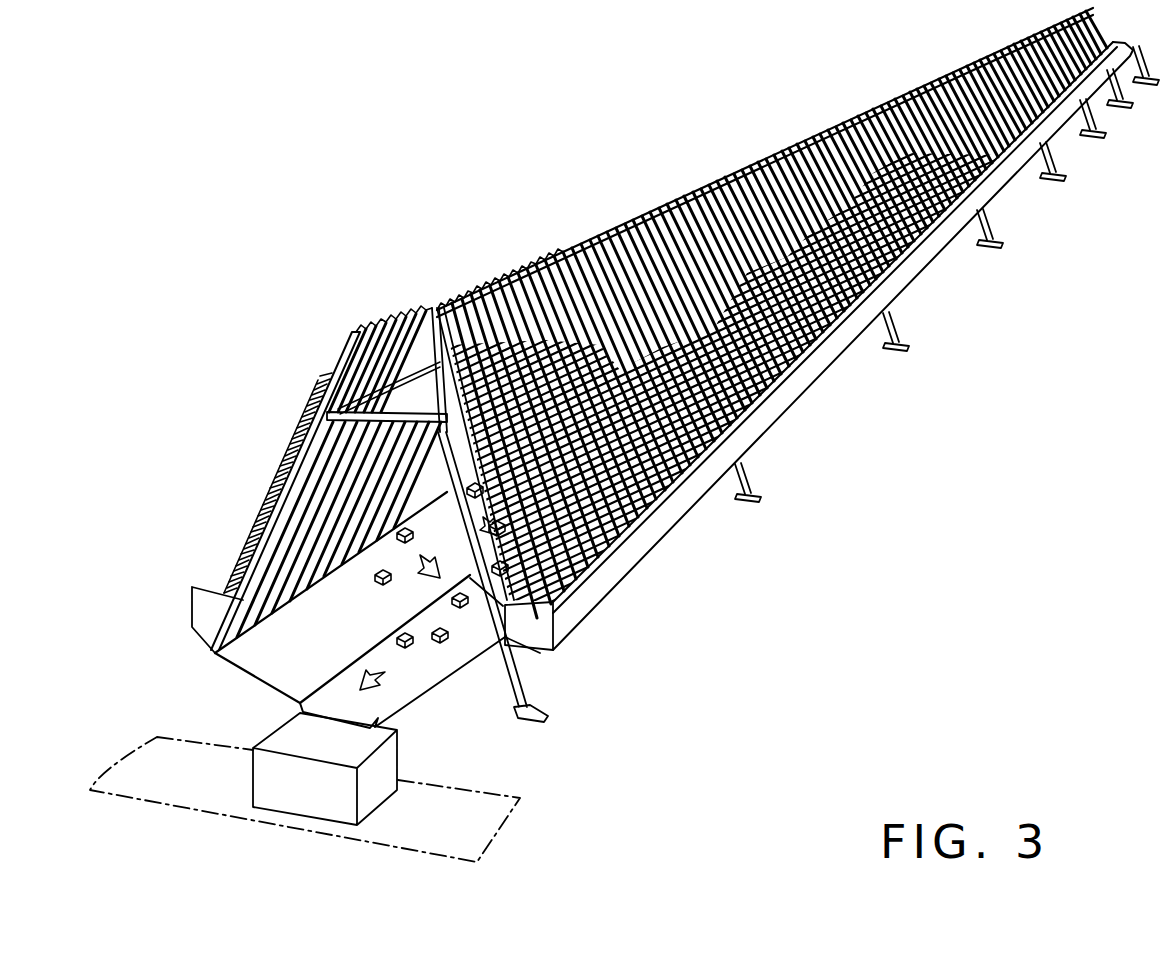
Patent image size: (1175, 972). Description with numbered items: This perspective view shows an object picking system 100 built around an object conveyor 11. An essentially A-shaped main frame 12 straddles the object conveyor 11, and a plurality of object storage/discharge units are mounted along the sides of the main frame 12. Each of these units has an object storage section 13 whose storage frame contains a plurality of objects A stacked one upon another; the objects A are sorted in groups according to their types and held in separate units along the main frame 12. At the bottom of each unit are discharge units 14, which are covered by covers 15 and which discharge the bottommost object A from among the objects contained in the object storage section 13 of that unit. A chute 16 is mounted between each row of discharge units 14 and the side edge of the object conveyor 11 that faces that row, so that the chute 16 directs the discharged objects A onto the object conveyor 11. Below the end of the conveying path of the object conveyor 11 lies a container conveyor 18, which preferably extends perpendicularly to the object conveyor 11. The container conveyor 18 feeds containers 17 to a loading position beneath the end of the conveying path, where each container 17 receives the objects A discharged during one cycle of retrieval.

The object picking system 100 is at (402, 226).
The object conveyor 11 is at (415, 660).
The main frame 12 is at (548, 652).
The object storage sections 13 is at (373, 317).
The discharge units 14 is at (212, 616).
The covers 15 is at (190, 590).
The chute 16 is at (258, 657).
The containers 17 is at (255, 795).
The container conveyor 18 is at (200, 808).
The objects A is at (312, 382).